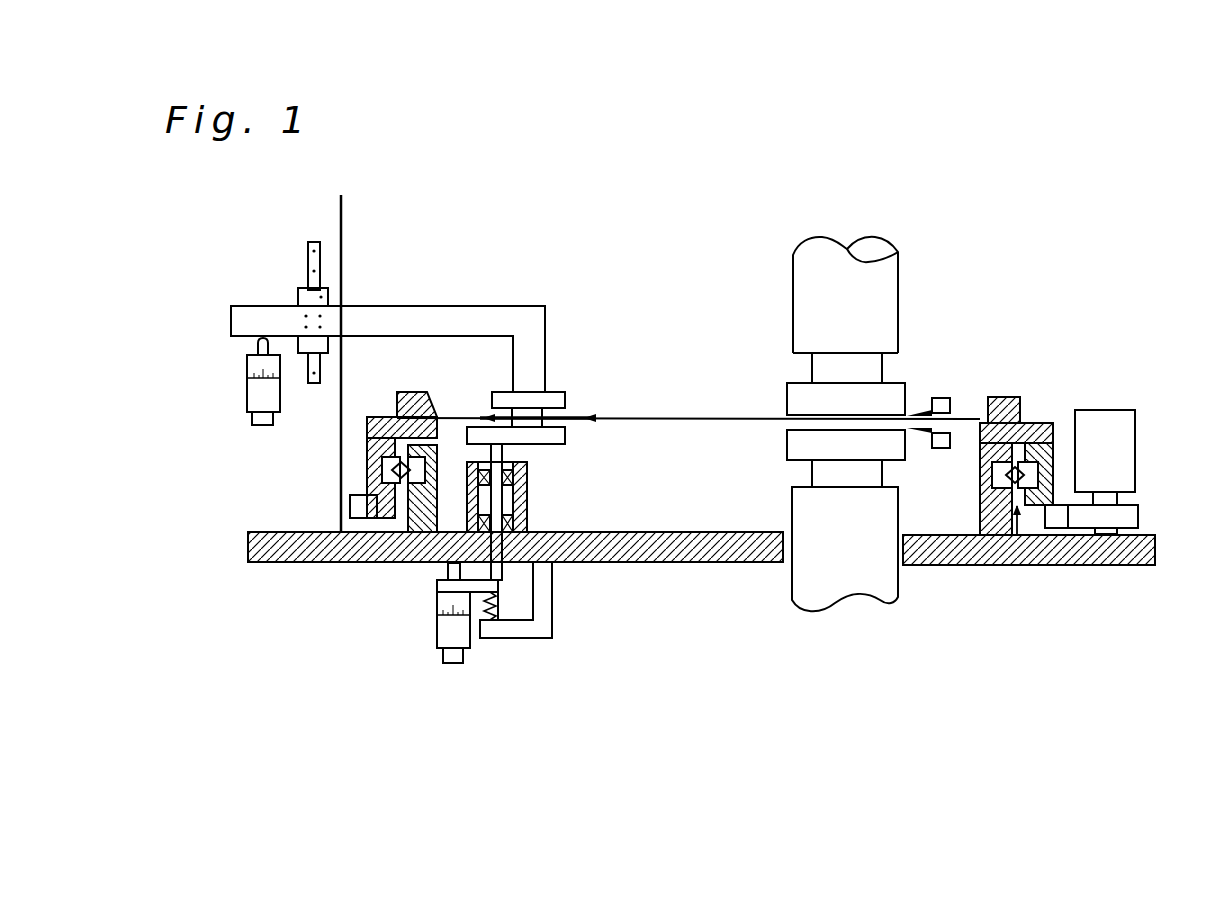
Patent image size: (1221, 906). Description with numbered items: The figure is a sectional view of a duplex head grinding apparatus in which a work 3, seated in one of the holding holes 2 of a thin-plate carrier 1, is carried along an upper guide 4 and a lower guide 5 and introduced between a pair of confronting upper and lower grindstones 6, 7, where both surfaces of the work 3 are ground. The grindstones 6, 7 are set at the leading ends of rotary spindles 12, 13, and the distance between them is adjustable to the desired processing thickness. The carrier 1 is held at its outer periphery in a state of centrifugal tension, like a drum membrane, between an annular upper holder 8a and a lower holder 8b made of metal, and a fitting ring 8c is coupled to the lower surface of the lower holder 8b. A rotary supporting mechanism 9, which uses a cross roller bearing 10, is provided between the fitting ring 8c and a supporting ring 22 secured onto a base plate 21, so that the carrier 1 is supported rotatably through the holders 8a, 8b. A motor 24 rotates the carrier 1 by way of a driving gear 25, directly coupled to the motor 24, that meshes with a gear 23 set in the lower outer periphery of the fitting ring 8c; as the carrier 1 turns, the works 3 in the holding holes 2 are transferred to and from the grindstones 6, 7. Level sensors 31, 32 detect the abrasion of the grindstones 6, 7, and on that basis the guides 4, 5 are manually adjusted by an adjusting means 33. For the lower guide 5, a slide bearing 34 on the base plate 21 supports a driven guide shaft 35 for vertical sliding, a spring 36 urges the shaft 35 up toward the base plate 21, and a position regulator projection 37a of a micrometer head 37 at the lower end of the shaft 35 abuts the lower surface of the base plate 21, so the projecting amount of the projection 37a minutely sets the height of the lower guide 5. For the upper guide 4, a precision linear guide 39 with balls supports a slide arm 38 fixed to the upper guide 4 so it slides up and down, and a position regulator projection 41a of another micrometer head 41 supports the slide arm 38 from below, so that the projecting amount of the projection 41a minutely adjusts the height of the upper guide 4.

The carrier 1 is at (641, 421).
The holding hole 2 is at (531, 428).
The work 3 is at (527, 414).
The upper guide 4 is at (558, 403).
The lower guide 5 is at (558, 436).
The upper grindstone 6 is at (892, 398).
The lower grindstone 7 is at (890, 447).
The upper holder 8a is at (1005, 408).
The lower holder 8b is at (1044, 450).
The fitting ring 8c is at (1042, 450).
The rotary supporting mechanism 9 is at (1060, 520).
The cross roller bearing 10 is at (987, 518).
The rotary spindle 12 is at (880, 311).
The rotary spindle 13 is at (807, 576).
The base plate 21 is at (945, 557).
The supporting ring 22 is at (982, 522).
The gear 23 is at (1098, 565).
The motor 24 is at (1125, 472).
The driving gear 25 is at (1127, 517).
The level sensor 31 is at (941, 403).
The level sensor 32 is at (942, 450).
The adjusting means 33 is at (250, 426).
The slide bearing 34 is at (525, 502).
The driven guide shaft 35 is at (502, 572).
The spring 36 is at (498, 598).
The micrometer head 37 is at (437, 628).
The position regulator projection 37a is at (449, 571).
The slide arm 38 is at (440, 323).
The precision linear guide 39 is at (318, 263).
The micrometer head 41 is at (252, 392).
The position regulator projection 41a is at (258, 344).